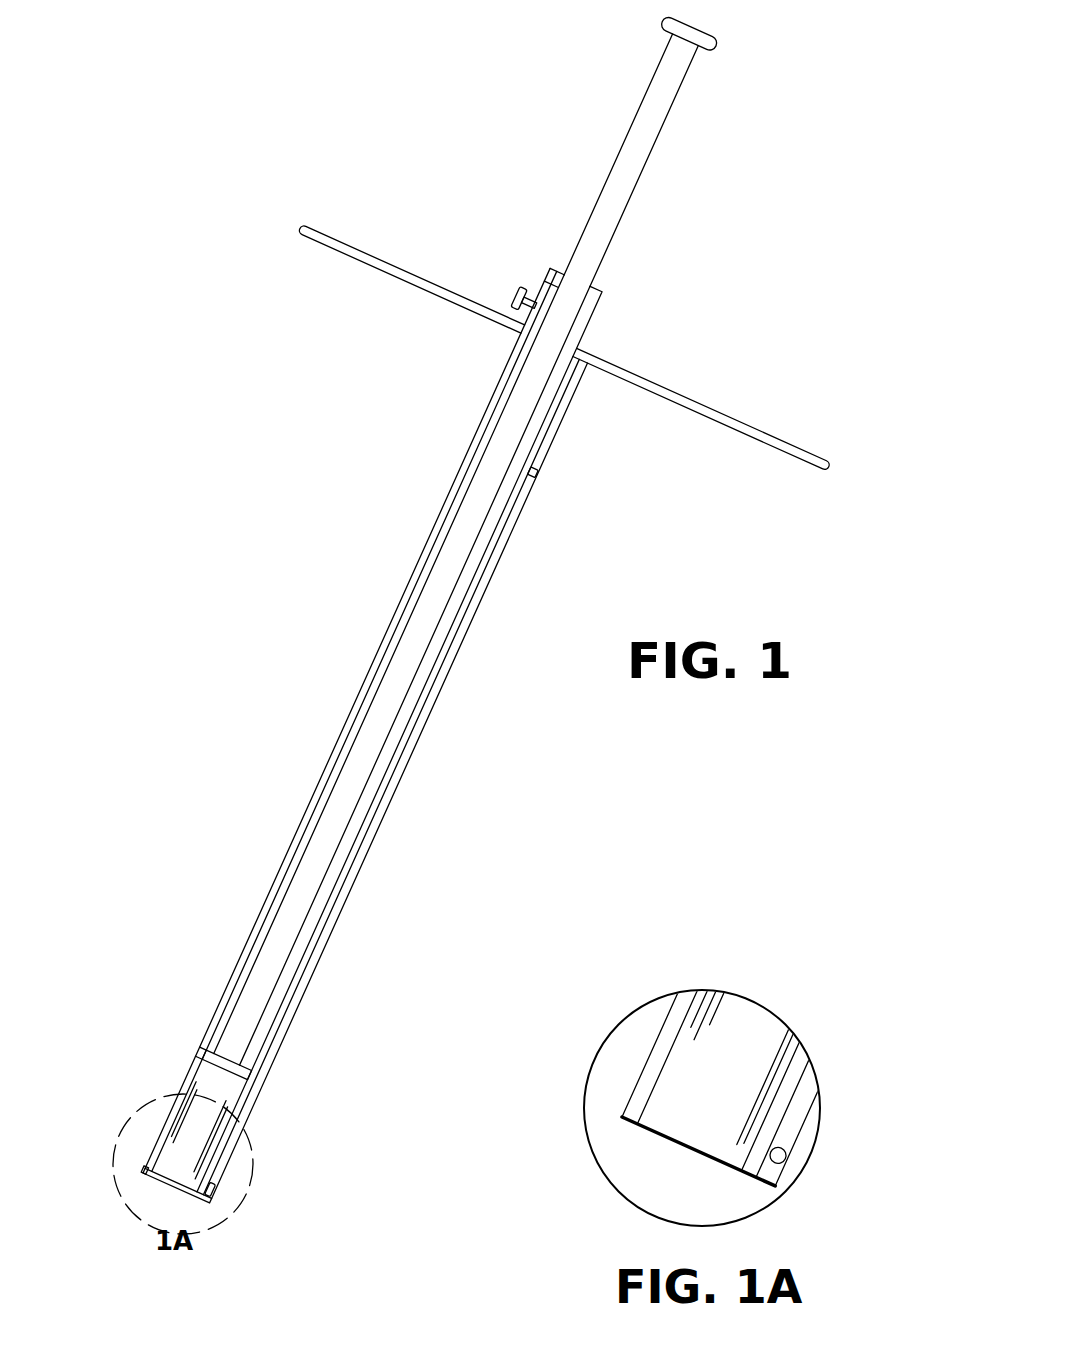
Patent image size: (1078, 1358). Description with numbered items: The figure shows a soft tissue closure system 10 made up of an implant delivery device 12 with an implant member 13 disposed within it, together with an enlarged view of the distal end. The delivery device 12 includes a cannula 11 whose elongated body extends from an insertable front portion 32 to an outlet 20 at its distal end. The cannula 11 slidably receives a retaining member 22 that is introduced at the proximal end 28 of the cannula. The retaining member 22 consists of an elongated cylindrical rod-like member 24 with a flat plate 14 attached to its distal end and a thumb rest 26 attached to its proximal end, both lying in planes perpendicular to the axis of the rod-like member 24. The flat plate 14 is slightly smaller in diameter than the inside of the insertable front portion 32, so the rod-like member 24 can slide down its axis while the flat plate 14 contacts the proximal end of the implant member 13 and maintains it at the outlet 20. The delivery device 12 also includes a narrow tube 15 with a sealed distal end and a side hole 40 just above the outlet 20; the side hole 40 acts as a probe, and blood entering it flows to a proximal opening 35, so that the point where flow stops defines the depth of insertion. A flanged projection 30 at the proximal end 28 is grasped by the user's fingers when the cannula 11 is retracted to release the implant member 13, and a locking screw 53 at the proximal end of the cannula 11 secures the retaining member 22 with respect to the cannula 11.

In FIG. 1, the soft tissue closure system 10 is at (524, 734).
In FIG. 1, the cannula 11 is at (398, 600).
In FIG. 1A, the cannula 11 is at (657, 1060).
In FIG. 1, the implant delivery device 12 is at (343, 689).
In FIG. 1, the implant member 13 is at (200, 1128).
In FIG. 1A, the implant member 13 is at (722, 1114).
In FIG. 1, the flat plate 14 is at (256, 1068).
In FIG. 1, the narrow tube 15 is at (505, 565).
In FIG. 1A, the narrow tube 15 is at (800, 1100).
In FIG. 1, the outlet 20 is at (172, 1178).
In FIG. 1, the retaining member 22 is at (662, 152).
In FIG. 1, the rod-like member 24 is at (343, 815).
In FIG. 1, the thumb rest 26 is at (714, 42).
In FIG. 1, the proximal end 28 is at (603, 322).
In FIG. 1, the flanged projection 30 is at (732, 420).
In FIG. 1, the insertable front portion 32 is at (198, 1052).
In FIG. 1, the proximal opening 35 is at (538, 474).
In FIG. 1, the side hole 40 is at (216, 1196).
In FIG. 1A, the side hole 40 is at (784, 1158).
In FIG. 1, the locking screw 53 is at (528, 290).